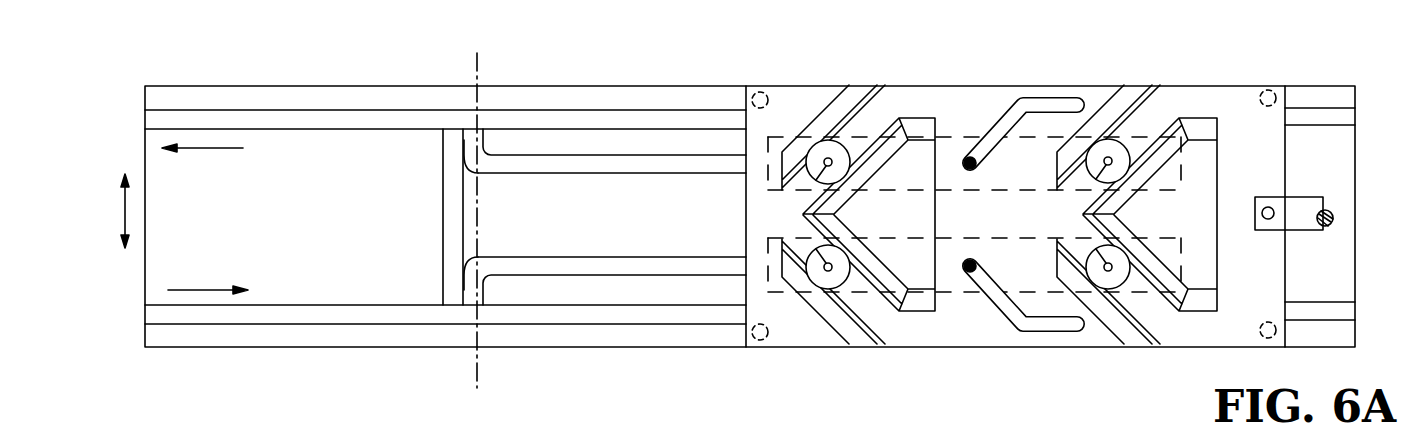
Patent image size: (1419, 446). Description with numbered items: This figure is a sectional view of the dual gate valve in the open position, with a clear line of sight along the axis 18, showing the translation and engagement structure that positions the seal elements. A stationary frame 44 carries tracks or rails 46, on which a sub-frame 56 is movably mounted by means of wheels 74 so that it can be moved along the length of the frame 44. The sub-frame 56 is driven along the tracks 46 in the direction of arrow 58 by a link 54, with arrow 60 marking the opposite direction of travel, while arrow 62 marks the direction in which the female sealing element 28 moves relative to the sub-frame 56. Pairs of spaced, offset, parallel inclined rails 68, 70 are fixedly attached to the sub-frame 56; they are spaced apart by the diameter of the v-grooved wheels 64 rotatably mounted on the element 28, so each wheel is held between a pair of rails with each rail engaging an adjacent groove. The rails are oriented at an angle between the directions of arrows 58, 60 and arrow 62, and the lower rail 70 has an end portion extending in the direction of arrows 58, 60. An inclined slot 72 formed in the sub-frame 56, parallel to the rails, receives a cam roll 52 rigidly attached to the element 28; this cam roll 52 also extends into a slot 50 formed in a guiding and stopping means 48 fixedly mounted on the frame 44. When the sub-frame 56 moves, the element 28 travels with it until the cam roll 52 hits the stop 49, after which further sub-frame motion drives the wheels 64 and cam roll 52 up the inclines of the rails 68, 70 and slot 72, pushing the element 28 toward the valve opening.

The axis 18 is at (478, 72).
The female sealing element 28 is at (966, 135).
The frame 44 is at (214, 227).
The track 46 is at (354, 120).
The guiding and stopping means 48 is at (455, 212).
The stop 49 is at (462, 142).
The slot 50 is at (532, 268).
The cam roll 52 is at (976, 262).
The link 54 is at (1298, 197).
The sub-frame 56 is at (792, 84).
The arrow 58 is at (243, 148).
The arrow 60 is at (203, 289).
The arrow 62 is at (123, 220).
The v-grooved wheels 64 is at (814, 247).
The inclined rail 68 is at (851, 96).
The inclined rail 70 is at (852, 231).
The inclined slot 72 is at (1047, 100).
The wheels 74 is at (756, 92).